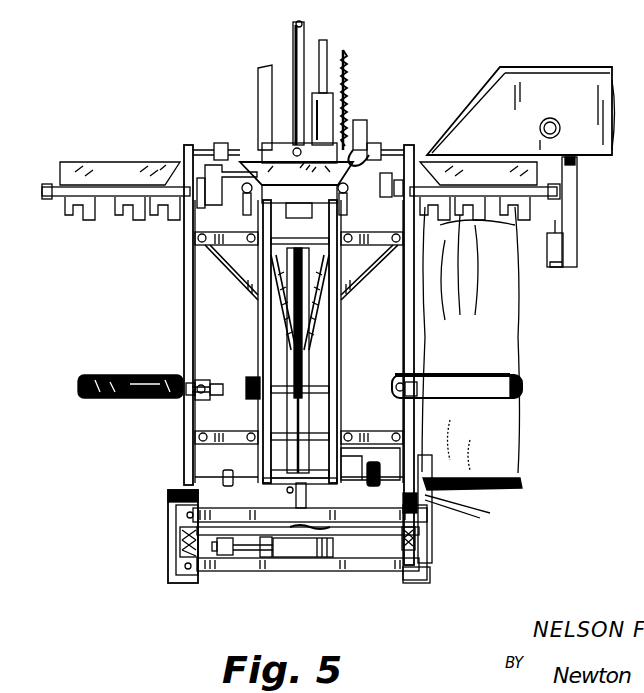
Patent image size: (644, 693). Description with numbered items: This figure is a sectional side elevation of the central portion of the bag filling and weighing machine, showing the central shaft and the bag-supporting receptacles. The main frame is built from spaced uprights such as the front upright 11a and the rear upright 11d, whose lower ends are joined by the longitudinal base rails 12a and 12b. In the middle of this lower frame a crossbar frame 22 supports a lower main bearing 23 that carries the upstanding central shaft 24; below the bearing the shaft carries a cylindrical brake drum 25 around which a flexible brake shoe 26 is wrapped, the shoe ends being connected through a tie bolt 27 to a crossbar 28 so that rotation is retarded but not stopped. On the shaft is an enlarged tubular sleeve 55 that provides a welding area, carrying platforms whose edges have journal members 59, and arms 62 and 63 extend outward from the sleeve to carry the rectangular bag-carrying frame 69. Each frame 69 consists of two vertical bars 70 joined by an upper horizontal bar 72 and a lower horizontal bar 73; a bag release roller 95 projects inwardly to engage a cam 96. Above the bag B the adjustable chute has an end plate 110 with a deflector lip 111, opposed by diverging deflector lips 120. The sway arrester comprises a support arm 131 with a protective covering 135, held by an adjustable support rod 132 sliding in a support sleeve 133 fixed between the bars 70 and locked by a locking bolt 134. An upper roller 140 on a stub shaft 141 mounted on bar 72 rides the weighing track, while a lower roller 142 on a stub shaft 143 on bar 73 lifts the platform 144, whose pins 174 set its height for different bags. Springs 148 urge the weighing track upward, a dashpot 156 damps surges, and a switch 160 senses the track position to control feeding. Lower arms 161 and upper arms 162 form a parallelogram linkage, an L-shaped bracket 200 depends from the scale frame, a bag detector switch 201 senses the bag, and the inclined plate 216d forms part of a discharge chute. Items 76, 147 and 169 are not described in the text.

The front upright 11a is at (168, 580).
The rear upright 11d is at (428, 583).
The base rail 12a is at (176, 545).
The base rail 12b is at (426, 545).
The crossbar frame 22 is at (394, 560).
The lower main bearing 23 is at (292, 530).
The central shaft 24 is at (295, 40).
The brake drum 25 is at (382, 533).
The brake shoe 26 is at (300, 556).
The tie bolt 27 is at (262, 556).
The crossbar 28 is at (225, 556).
The tubular sleeve 55 is at (306, 373).
The journal member 59 is at (207, 390).
The arm 62 is at (236, 265).
The arm 63 is at (208, 436).
The bag-carrying frame 69 is at (186, 268).
The vertical bar 70 is at (188, 310).
The upper horizontal bar 72 is at (280, 150).
The lower horizontal bar 73 is at (288, 490).
The diagonal brace 76 is at (250, 292).
The bag release roller 95 is at (299, 204).
The cam 96 is at (213, 180).
The end plate 110 is at (299, 192).
The deflector lip 111 is at (296, 173).
The deflector lip 120 is at (301, 191).
The support arm 131 is at (198, 392).
The adjustable support rod 132 is at (196, 393).
The support sleeve 133 is at (282, 388).
The locking bolt 134 is at (198, 385).
The protective covering 135 is at (252, 392).
The upper roller 140 is at (219, 143).
The stub shaft 141 is at (205, 150).
The lower roller 142 is at (242, 455).
The stub shaft 143 is at (207, 484).
The platform 144 is at (512, 491).
The upright bar 147 is at (262, 90).
The spring 148 is at (348, 78).
The dashpot 156 is at (333, 105).
The switch 160 is at (360, 125).
The lower arm 161 is at (206, 576).
The upper arm 162 is at (176, 510).
The bushing 169 is at (180, 540).
The pin 174 is at (418, 508).
The L-shaped bracket 200 is at (588, 246).
The bag detector switch 201 is at (563, 262).
The inclined plate 216d is at (546, 80).
The bag B is at (512, 345).